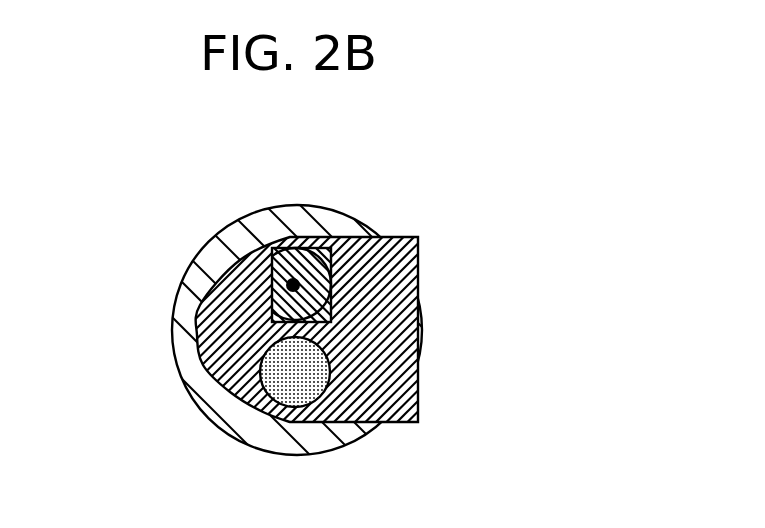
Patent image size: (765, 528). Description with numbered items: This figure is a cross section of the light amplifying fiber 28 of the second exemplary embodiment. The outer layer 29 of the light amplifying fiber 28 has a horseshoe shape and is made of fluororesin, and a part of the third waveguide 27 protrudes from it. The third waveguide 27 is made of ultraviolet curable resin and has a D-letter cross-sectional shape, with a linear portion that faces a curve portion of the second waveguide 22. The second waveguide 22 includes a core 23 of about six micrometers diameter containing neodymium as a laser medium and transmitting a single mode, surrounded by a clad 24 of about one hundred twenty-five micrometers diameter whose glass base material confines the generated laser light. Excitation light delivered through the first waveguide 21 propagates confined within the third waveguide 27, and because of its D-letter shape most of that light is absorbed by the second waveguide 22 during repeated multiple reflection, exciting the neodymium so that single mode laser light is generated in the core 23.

The first waveguide 21 is at (277, 372).
The second waveguide 22 is at (283, 263).
The core 23 is at (332, 248).
The clad 24 is at (305, 288).
The third waveguide 27 is at (390, 392).
The light amplifying fiber 28 is at (182, 403).
The outer layer 29 is at (305, 440).